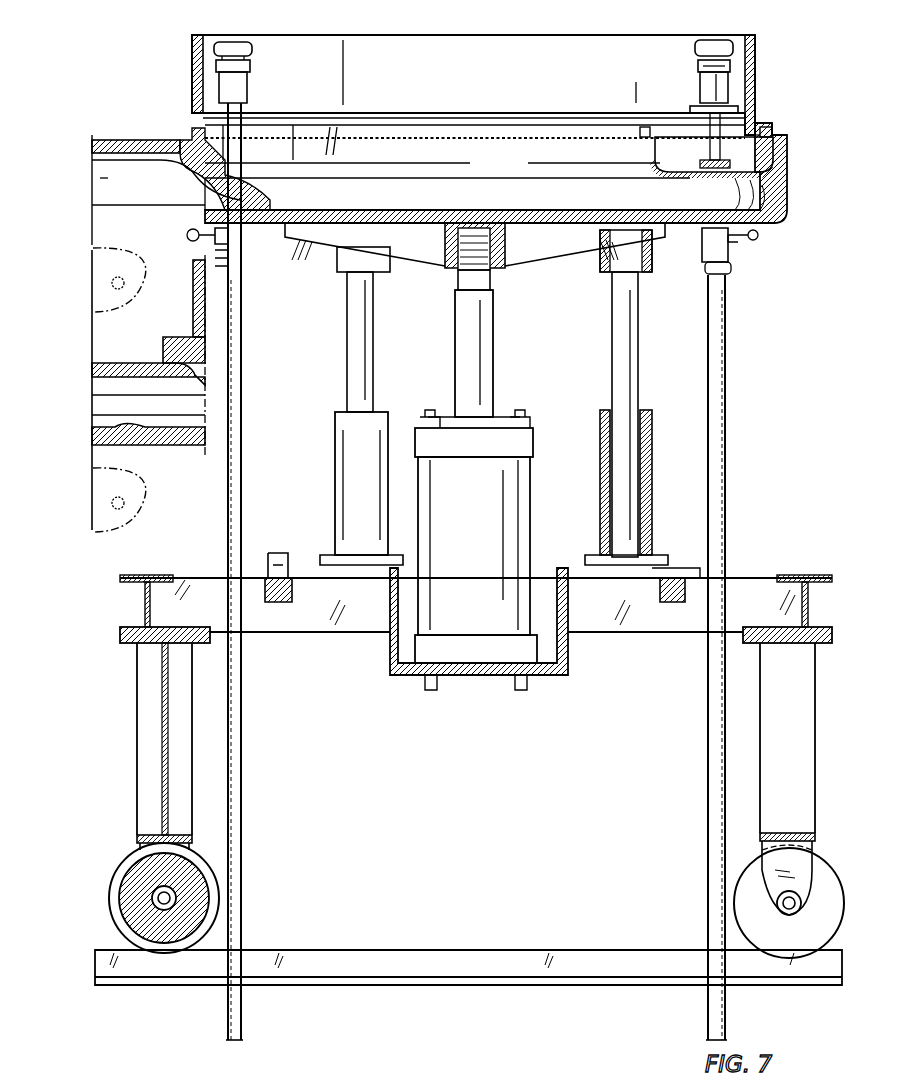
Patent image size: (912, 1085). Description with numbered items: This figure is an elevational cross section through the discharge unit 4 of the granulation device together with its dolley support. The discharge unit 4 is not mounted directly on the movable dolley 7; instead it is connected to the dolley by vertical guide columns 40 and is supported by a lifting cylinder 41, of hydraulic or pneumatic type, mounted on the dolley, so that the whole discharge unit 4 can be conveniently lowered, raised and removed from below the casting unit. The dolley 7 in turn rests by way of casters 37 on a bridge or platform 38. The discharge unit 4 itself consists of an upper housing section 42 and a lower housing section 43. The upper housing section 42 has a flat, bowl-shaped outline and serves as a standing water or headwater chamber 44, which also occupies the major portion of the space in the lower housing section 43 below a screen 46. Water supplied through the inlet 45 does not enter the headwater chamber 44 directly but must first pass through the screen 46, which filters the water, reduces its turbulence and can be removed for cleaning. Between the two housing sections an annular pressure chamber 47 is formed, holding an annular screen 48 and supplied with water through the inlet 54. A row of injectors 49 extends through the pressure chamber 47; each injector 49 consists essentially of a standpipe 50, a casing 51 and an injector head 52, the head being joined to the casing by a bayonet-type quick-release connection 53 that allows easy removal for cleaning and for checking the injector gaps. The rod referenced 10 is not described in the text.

The discharge unit 4 is at (810, 150).
The dolley 7 is at (746, 578).
The guide tube 10 is at (243, 789).
The casters 37 is at (216, 878).
The bridge or platform 38 is at (446, 950).
The vertical guide columns 40 is at (402, 398).
The lifting cylinder 41 is at (496, 547).
The upper housing section 42 is at (757, 66).
The lower housing section 43 is at (788, 190).
The headwater chamber 44 is at (463, 88).
The inlet 45 is at (159, 413).
The screen 46 is at (520, 140).
The annular pressure chamber 47 is at (775, 128).
The annular screen 48 is at (703, 137).
The injectors 49 is at (280, 92).
The standpipe 50 is at (676, 176).
The casing 51 is at (727, 96).
The injector head 52 is at (727, 40).
The bayonet-type quick-release connection 53 is at (657, 67).
The inlet 54 is at (144, 188).